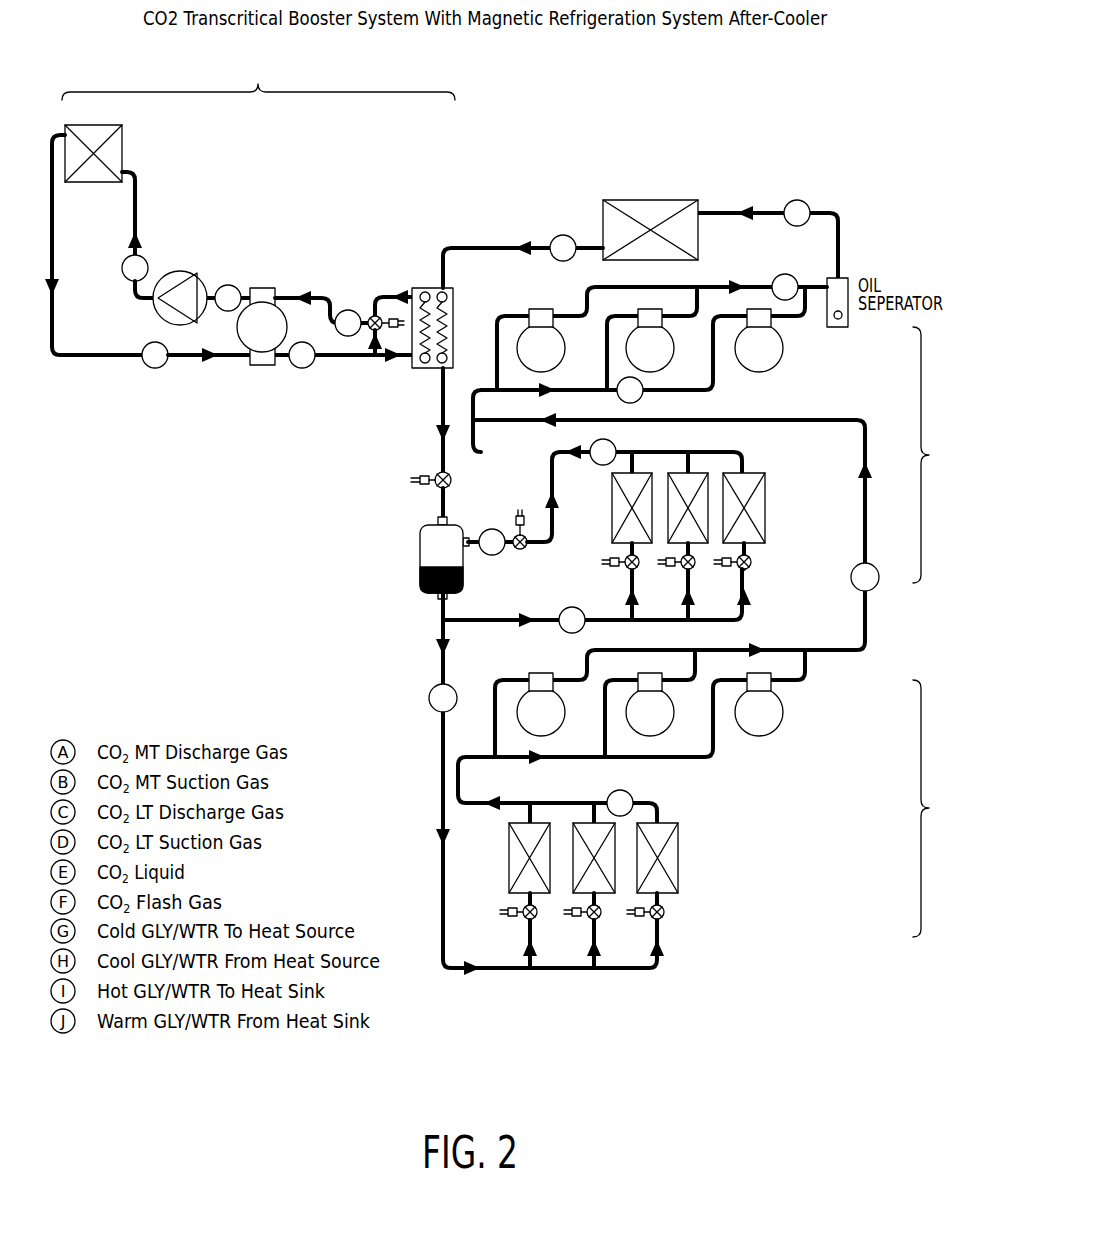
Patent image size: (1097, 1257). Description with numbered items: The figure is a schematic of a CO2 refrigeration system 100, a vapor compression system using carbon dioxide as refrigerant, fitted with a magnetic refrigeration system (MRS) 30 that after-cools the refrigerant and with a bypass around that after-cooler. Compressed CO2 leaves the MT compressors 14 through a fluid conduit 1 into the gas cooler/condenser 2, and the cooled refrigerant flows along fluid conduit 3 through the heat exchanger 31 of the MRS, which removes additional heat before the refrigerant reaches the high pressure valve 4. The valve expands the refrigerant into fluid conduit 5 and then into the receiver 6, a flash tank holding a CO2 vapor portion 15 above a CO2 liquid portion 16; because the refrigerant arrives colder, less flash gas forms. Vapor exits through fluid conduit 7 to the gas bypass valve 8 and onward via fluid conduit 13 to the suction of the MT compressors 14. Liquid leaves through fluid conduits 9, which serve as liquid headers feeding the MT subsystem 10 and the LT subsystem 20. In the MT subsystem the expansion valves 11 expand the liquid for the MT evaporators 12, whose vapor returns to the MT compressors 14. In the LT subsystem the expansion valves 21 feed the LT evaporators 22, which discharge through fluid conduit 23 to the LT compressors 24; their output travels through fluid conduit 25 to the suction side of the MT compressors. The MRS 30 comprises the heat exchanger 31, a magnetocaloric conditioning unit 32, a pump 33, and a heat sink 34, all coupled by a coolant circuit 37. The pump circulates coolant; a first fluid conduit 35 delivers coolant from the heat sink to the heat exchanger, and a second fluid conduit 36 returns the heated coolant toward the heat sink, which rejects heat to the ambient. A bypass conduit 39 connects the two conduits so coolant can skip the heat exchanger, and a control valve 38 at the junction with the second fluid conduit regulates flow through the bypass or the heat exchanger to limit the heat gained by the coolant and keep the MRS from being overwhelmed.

The fluid conduit 1 is at (840, 234).
The gas cooler/condenser 2 is at (698, 232).
The fluid conduit 3 is at (478, 245).
The high pressure valve 4 is at (452, 478).
The fluid conduit 5 is at (440, 502).
The receiver 6 is at (394, 558).
The fluid conduit 7 is at (472, 540).
The gas bypass valve 8 is at (527, 536).
The fluid conduits 9 is at (472, 624).
The medium-temperature subsystem 10 is at (936, 455).
The expansion valves 11 is at (750, 570).
The MT evaporators 12 is at (755, 473).
The fluid conduits 13 is at (558, 458).
The MT compressors 14 is at (784, 346).
The CO2 vapor portion 15 is at (433, 560).
The CO2 liquid portion 16 is at (433, 591).
The low-temperature subsystem 20 is at (936, 808).
The expansion valves 21 is at (665, 918).
The LT evaporators 22 is at (673, 823).
The fluid conduit 23 is at (462, 806).
The LT compressors 24 is at (784, 712).
The fluid conduit 25 is at (868, 618).
The magnetic refrigeration system 30 is at (258, 130).
The heat exchanger 31 is at (436, 286).
The magnetocaloric conditioning unit 32 is at (243, 327).
The pump 33 is at (177, 271).
The heat sink 34 is at (90, 183).
The first fluid conduit 35 is at (232, 360).
The second fluid conduit 36 is at (287, 294).
The coolant circuit 37 is at (125, 378).
The control valve 38 is at (367, 316).
The bypass conduit 39 is at (368, 345).
The CO2 refrigeration system 100 is at (800, 93).